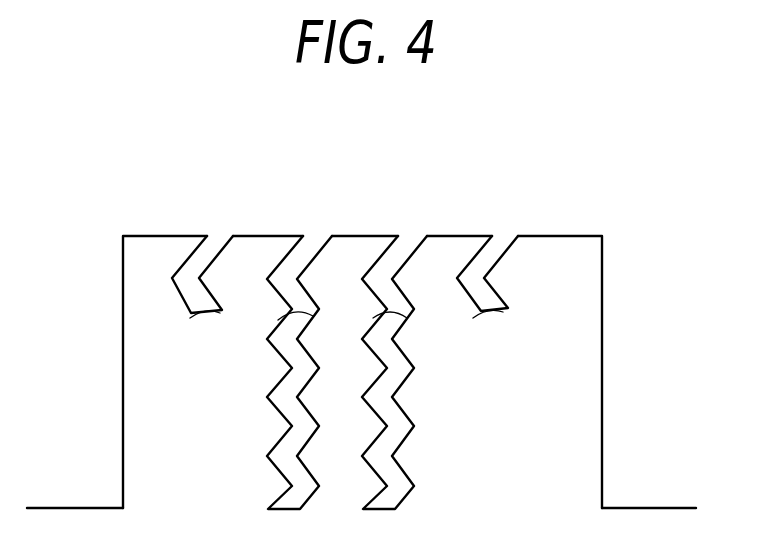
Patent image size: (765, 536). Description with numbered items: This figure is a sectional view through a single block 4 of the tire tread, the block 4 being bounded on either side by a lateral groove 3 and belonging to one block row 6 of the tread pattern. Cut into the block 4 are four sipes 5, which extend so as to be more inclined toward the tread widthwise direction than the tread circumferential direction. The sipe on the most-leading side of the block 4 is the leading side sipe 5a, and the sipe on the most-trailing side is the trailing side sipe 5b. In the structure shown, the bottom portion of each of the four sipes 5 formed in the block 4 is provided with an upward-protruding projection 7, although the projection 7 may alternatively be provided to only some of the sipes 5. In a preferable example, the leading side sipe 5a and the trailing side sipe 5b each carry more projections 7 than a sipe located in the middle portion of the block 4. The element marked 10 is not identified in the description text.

The lateral groove 3 is at (57, 420).
The block 4 is at (160, 235).
The sipe 5 is at (403, 242).
The leading side sipe 5a is at (501, 245).
The trailing side sipe 5b is at (215, 240).
The block row 6 is at (323, 330).
The projection 7 is at (298, 318).
The wall portion 10 is at (447, 235).